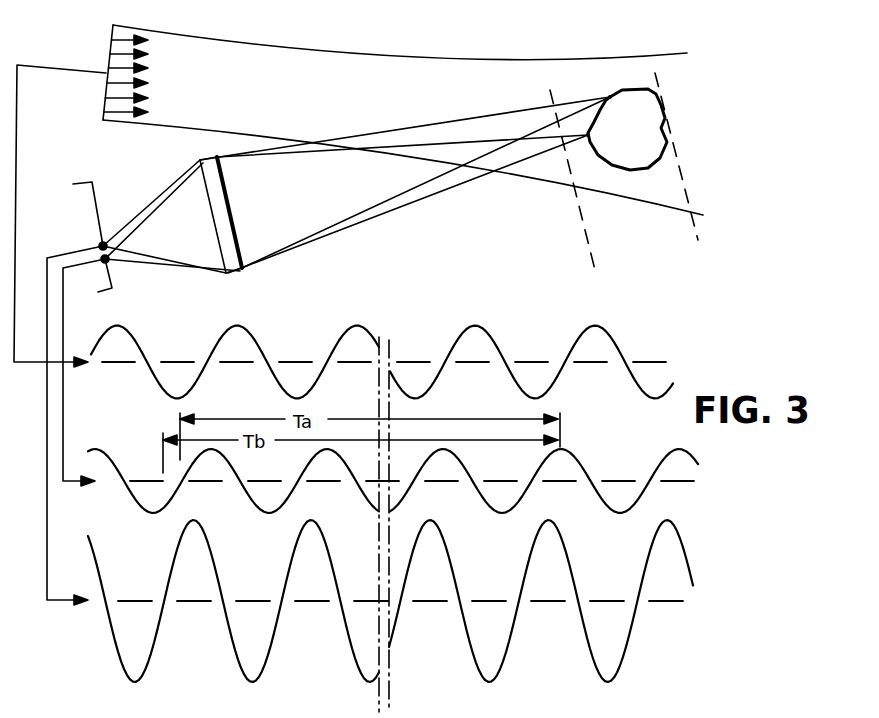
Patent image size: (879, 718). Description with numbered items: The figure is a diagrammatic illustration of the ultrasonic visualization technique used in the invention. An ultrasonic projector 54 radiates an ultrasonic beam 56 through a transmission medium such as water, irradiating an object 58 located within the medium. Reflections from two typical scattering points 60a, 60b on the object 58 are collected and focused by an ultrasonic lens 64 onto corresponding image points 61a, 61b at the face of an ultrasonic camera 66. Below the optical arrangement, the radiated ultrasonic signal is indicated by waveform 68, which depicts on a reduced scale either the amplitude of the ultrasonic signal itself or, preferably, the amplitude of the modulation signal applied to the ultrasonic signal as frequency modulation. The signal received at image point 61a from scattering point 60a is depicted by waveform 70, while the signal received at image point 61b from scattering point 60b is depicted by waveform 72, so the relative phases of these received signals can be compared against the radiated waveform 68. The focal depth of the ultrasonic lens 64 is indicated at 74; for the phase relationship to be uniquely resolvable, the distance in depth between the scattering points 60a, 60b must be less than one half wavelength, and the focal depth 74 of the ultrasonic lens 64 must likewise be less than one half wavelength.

The ultrasonic projector 54 is at (109, 43).
The ultrasonic beam 56 is at (300, 72).
The object 58 is at (637, 120).
The scattering point 60a is at (611, 96).
The scattering point 60b is at (588, 137).
The image point 61a is at (107, 261).
The image point 61b is at (103, 245).
The ultrasonic lens 64 is at (240, 272).
The ultrasonic camera 66 is at (80, 183).
The waveform 68 is at (143, 343).
The waveform 70 is at (112, 463).
The waveform 72 is at (104, 562).
The focal depth 74 is at (692, 222).